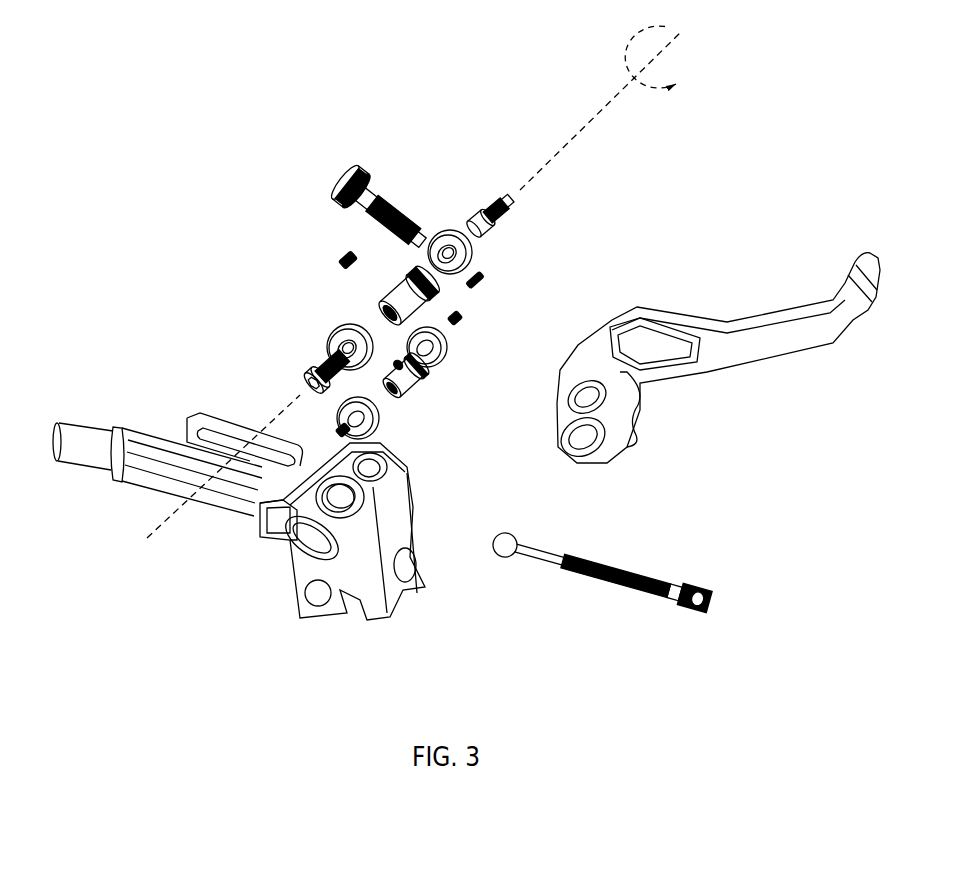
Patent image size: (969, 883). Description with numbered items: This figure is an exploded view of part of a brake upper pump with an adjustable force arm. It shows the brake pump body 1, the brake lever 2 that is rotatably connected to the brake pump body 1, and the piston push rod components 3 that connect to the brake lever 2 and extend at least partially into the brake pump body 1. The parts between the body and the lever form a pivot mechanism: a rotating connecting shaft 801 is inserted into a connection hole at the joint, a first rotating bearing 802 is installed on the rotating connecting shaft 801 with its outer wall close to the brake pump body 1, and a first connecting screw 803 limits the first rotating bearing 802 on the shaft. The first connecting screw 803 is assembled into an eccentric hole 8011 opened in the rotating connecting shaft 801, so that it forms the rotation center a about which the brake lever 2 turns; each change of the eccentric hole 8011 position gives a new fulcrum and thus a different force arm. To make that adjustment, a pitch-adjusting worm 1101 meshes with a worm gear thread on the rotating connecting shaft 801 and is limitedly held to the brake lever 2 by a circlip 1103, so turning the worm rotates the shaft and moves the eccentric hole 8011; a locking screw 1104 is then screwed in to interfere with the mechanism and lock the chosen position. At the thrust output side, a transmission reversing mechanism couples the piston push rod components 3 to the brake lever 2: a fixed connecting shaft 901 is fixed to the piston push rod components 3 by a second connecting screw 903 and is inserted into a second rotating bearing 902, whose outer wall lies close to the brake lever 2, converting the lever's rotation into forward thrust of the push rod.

The brake pump body 1 is at (143, 477).
The brake lever 2 is at (760, 318).
The piston push rod components 3 is at (640, 598).
The rotation center a is at (661, 52).
The pitch-adjusting worm 1101 is at (343, 187).
The circlip 1103 is at (607, 262).
The locking screw 1104 is at (338, 250).
The rotating connecting shaft 801 is at (380, 314).
The eccentric hole 8011 is at (383, 308).
The first rotating bearing 802 is at (330, 342).
The first connecting screw 803 is at (305, 376).
The fixed connecting shaft 901 is at (408, 384).
The second rotating bearing 902 is at (547, 385).
The second connecting screw 903 is at (563, 348).